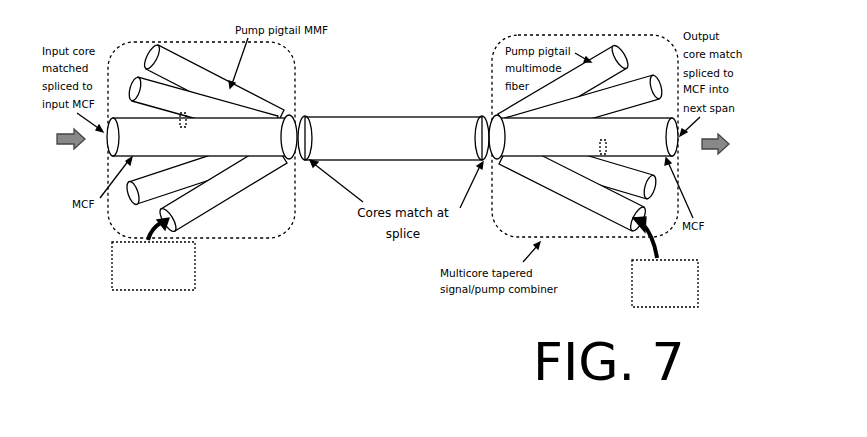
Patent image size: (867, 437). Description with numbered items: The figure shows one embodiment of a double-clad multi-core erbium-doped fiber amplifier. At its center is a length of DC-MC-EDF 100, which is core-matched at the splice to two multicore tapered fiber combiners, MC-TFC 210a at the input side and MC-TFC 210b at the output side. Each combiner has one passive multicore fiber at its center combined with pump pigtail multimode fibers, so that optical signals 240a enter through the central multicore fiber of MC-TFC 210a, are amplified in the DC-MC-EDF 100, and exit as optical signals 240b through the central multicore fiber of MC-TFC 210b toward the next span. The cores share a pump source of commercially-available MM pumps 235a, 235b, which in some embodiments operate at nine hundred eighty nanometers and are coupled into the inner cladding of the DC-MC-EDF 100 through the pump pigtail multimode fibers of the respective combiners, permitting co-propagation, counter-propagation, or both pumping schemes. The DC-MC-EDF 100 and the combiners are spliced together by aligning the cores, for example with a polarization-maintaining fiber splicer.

The DC-MC-EDF 100 is at (412, 115).
The MC-TFC 210a is at (201, 38).
The MC-TFC 210b is at (571, 33).
The MM pump 235a is at (196, 262).
The MM pump 235b is at (630, 280).
The optical signals 240a is at (77, 147).
The optical signals 240b is at (710, 153).